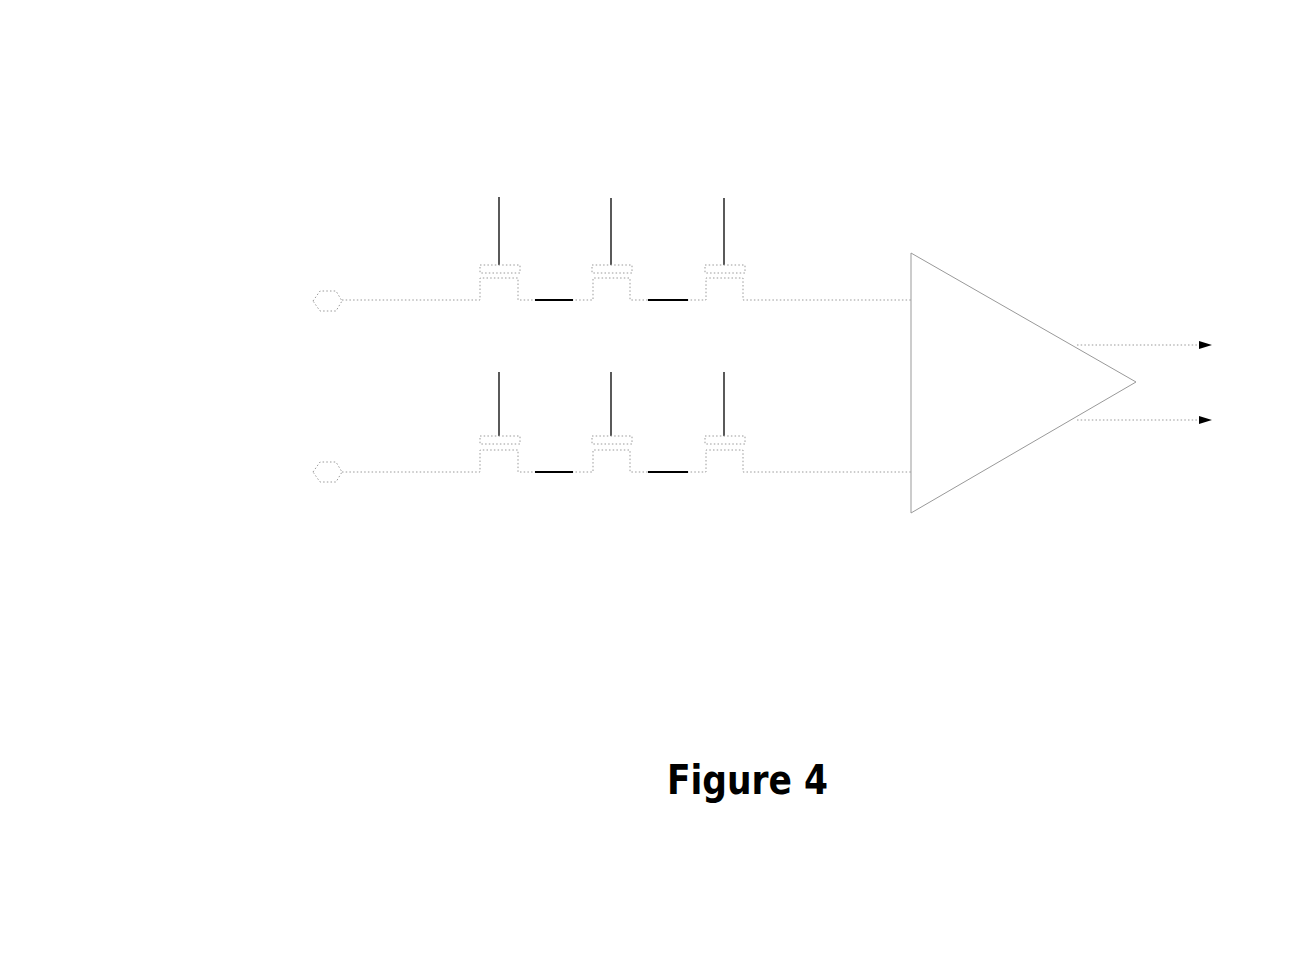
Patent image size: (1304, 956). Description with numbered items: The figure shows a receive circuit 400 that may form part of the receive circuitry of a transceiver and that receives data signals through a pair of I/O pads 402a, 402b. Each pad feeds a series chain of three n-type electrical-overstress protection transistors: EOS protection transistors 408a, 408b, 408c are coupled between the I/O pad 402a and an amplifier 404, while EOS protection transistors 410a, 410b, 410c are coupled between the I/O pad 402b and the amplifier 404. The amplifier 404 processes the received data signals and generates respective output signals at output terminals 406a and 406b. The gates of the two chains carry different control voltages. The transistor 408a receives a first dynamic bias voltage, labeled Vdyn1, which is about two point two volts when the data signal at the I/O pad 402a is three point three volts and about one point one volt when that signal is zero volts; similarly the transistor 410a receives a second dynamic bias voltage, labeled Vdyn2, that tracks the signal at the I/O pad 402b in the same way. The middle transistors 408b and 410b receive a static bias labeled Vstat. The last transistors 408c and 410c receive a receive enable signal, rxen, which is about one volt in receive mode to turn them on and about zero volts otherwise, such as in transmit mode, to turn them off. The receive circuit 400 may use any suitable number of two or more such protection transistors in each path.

The receive circuit 400 is at (243, 132).
The I/O pad 402a is at (318, 292).
The I/O pad 402b is at (320, 472).
The amplifier 404 is at (1002, 323).
The output terminal 406a is at (1175, 345).
The output terminal 406b is at (1167, 420).
The EOS protection transistor 408a is at (467, 268).
The EOS protection transistor 408b is at (596, 254).
The EOS protection transistor 408c is at (762, 255).
The EOS protection transistor 410a is at (499, 478).
The EOS protection transistor 410b is at (616, 479).
The EOS protection transistor 410c is at (724, 478).